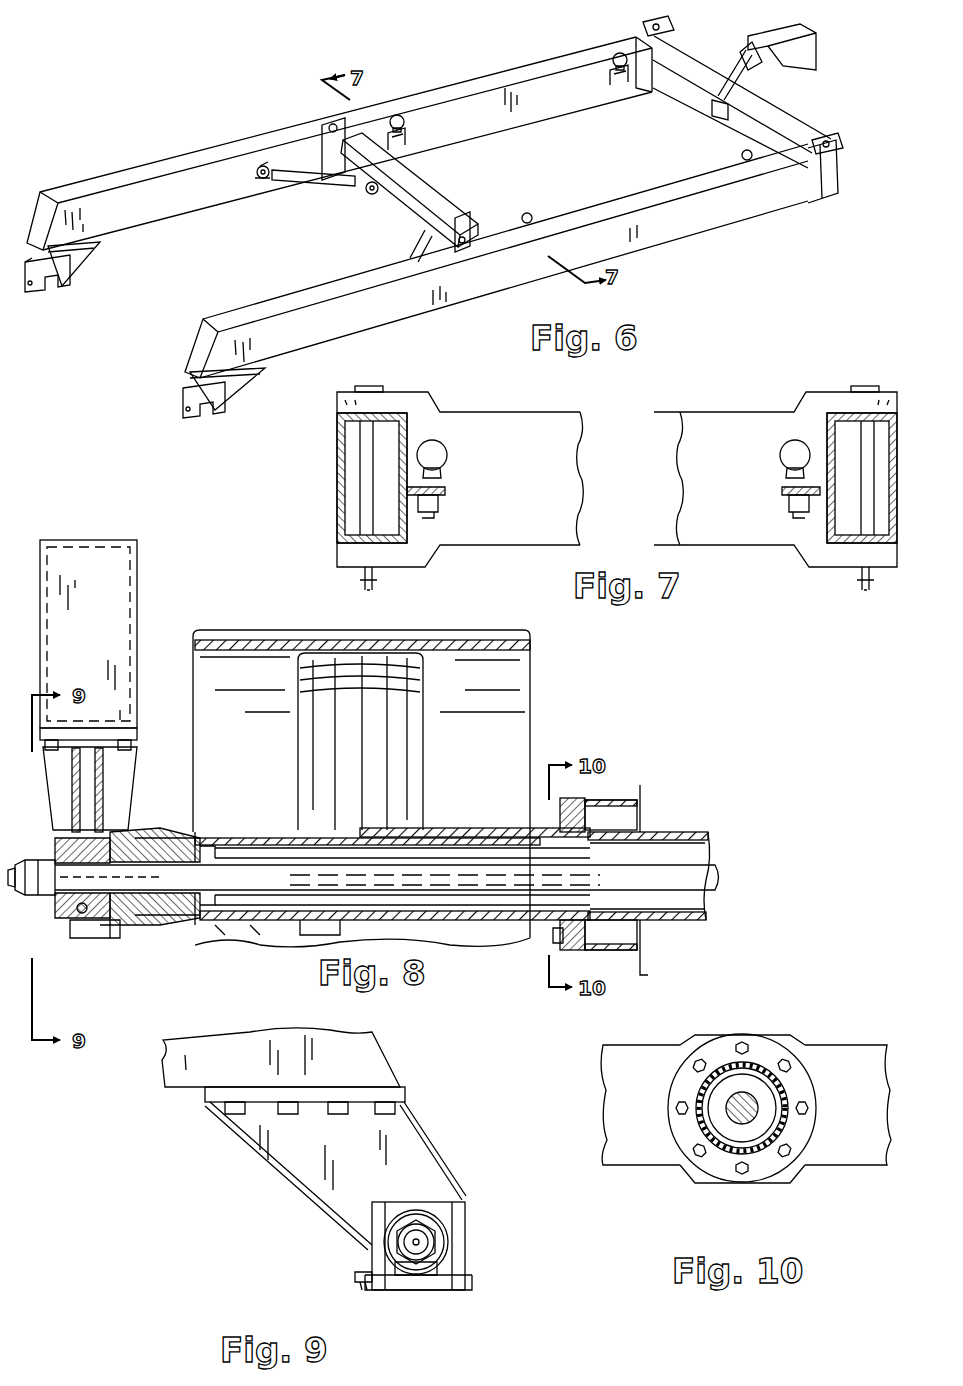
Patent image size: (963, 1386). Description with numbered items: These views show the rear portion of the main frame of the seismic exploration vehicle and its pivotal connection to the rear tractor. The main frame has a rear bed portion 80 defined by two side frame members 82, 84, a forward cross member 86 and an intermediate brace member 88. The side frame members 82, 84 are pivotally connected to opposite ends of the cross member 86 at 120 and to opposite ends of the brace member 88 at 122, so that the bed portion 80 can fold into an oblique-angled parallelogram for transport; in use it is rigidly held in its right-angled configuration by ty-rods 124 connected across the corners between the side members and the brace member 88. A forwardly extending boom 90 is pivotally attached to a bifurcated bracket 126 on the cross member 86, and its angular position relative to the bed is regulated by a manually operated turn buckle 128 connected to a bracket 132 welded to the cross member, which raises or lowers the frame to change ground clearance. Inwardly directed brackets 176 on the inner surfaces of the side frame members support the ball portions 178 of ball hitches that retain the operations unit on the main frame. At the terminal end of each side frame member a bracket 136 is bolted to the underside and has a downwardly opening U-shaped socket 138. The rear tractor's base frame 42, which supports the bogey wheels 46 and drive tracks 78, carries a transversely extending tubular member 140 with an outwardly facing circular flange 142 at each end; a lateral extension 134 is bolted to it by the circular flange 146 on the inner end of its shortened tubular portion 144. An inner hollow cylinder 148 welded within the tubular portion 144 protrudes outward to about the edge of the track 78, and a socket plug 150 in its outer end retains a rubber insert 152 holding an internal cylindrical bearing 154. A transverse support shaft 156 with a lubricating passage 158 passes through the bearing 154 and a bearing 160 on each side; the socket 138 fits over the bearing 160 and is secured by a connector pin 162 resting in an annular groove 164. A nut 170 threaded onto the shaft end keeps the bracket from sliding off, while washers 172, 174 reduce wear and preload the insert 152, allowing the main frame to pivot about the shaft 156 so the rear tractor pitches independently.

In FIG. 8, the base frame 42 is at (642, 790).
In FIG. 10, the base frame 42 is at (705, 1040).
In FIG. 8, the bogey wheels 46 is at (325, 728).
In FIG. 8, the drive tracks 78 is at (250, 640).
In FIG. 6, the rear bed portion 80 is at (668, 250).
In FIG. 6, the side frame member 82 is at (722, 210).
In FIG. 6, the side frame member 84 is at (478, 62).
In FIG. 7, the side frame member 84 is at (435, 491).
In FIG. 8, the side frame member 84 is at (118, 590).
In FIG. 9, the side frame member 84 is at (380, 1065).
In FIG. 6, the forward cross member 86 is at (798, 128).
In FIG. 7, the forward cross member 86 is at (756, 482).
In FIG. 6, the intermediate brace member 88 is at (410, 207).
In FIG. 6, the forwardly extending boom 90 is at (812, 55).
In FIG. 6, the pivotal connection 120 is at (668, 22).
In FIG. 7, the pivotal connection 120 is at (370, 386).
In FIG. 6, the pivotal connection 122 is at (325, 125).
In FIG. 6, the ty-rods 124 is at (320, 183).
In FIG. 6, the bifurcated bracket 126 is at (800, 82).
In FIG. 6, the turn buckle 128 is at (718, 96).
In FIG. 6, the bracket 132 is at (715, 118).
In FIG. 8, the lateral extension 134 is at (183, 955).
In FIG. 6, the bracket 136 is at (80, 265).
In FIG. 8, the bracket 136 is at (120, 760).
In FIG. 9, the bracket 136 is at (415, 1165).
In FIG. 6, the U-shaped socket 138 is at (40, 292).
In FIG. 8, the U-shaped socket 138 is at (95, 940).
In FIG. 9, the U-shaped socket 138 is at (466, 1250).
In FIG. 8, the tubular member 140 is at (695, 832).
In FIG. 8, the circular flange 142 is at (600, 800).
In FIG. 8, the shortened tubular portion 144 is at (485, 828).
In FIG. 10, the shortened tubular portion 144 is at (790, 1108).
In FIG. 8, the circular flange 146 is at (560, 815).
In FIG. 10, the circular flange 146 is at (785, 1060).
In FIG. 8, the inner hollow cylinder 148 is at (283, 838).
In FIG. 10, the inner hollow cylinder 148 is at (775, 1128).
In FIG. 8, the socket plug 150 is at (180, 830).
In FIG. 8, the rubber insert 152 is at (200, 925).
In FIG. 8, the cylindrical bearing 154 is at (190, 880).
In FIG. 8, the transverse support shaft 156 is at (300, 880).
In FIG. 10, the transverse support shaft 156 is at (746, 1105).
In FIG. 8, the lubricating passage 158 is at (100, 925).
In FIG. 8, the bearing 160 is at (90, 920).
In FIG. 9, the bearing 160 is at (430, 1280).
In FIG. 8, the connector pin 162 is at (135, 920).
In FIG. 9, the connector pin 162 is at (402, 1290).
In FIG. 8, the annular groove 164 is at (128, 830).
In FIG. 8, the nut 170 is at (48, 862).
In FIG. 9, the nut 170 is at (436, 1225).
In FIG. 8, the washer 172 is at (38, 900).
In FIG. 9, the washer 172 is at (432, 1245).
In FIG. 8, the washer 174 is at (130, 940).
In FIG. 6, the brackets 176 is at (612, 85).
In FIG. 7, the brackets 176 is at (440, 520).
In FIG. 6, the ball portion 178 is at (612, 60).
In FIG. 7, the ball portion 178 is at (445, 450).